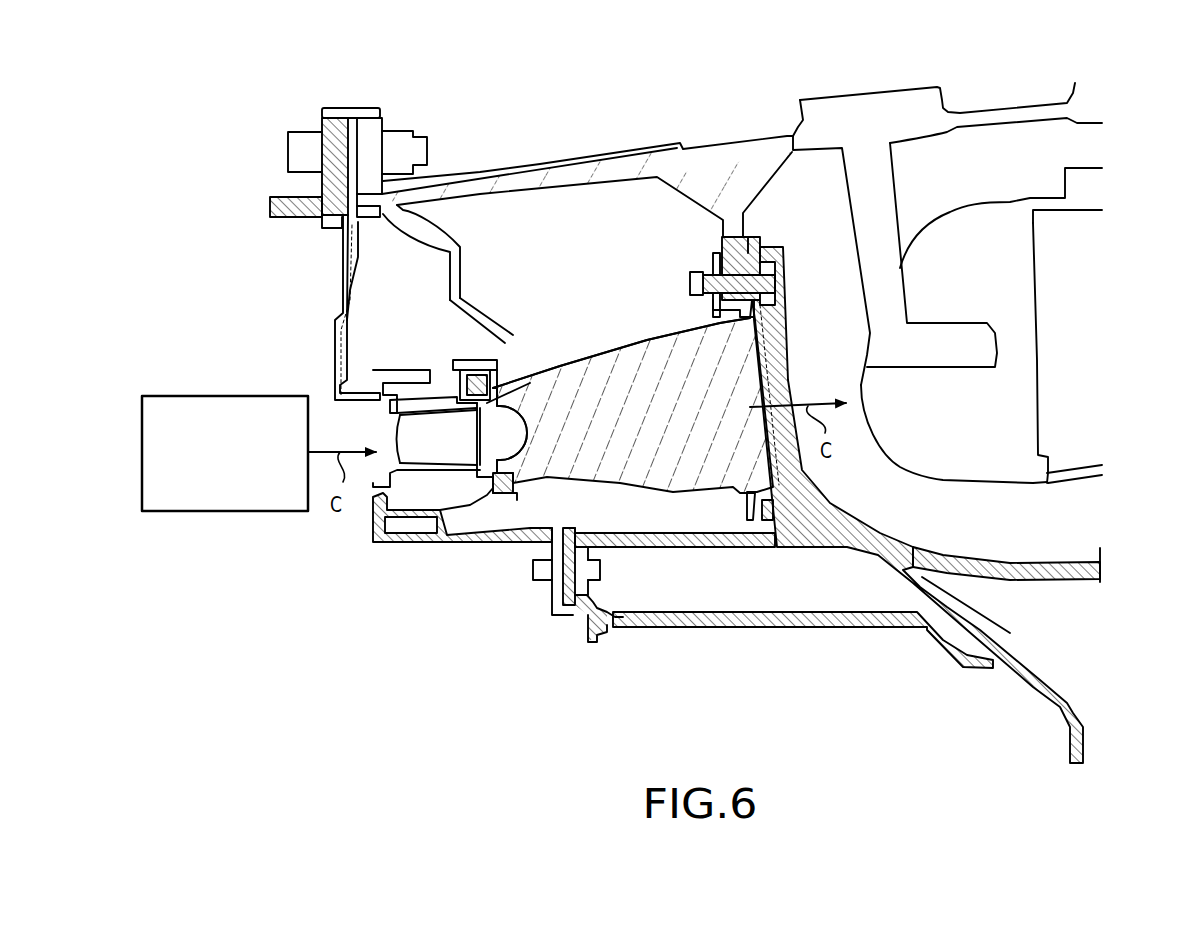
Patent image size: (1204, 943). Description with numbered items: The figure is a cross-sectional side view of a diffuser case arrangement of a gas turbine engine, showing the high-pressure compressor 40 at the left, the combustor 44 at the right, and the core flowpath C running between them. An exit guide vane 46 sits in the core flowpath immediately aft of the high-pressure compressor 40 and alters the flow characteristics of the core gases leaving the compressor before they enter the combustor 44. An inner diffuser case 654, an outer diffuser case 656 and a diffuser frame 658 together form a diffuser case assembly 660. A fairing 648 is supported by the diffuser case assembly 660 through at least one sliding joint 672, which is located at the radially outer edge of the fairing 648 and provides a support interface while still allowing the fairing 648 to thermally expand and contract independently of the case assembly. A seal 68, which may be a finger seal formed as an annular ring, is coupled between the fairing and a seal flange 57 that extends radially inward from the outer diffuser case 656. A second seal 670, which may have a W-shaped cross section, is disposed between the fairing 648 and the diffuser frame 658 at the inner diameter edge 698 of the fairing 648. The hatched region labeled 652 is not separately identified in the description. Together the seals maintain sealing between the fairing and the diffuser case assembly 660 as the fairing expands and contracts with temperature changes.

The high-pressure compressor 40 is at (214, 500).
The combustor 44 is at (1122, 110).
The exit guide vane 46 is at (427, 454).
The seal flange 57 is at (463, 262).
The seal 68 is at (495, 326).
The fairing 648 is at (625, 356).
The vane support body 652 is at (630, 430).
The inner diffuser case 654 is at (1085, 584).
The outer diffuser case 656 is at (530, 172).
The diffuser frame 658 is at (832, 503).
The diffuser case assembly 660 is at (712, 116).
The seal 670 is at (770, 505).
The sliding joint 672 is at (690, 262).
The inner diameter edge 698 is at (748, 540).